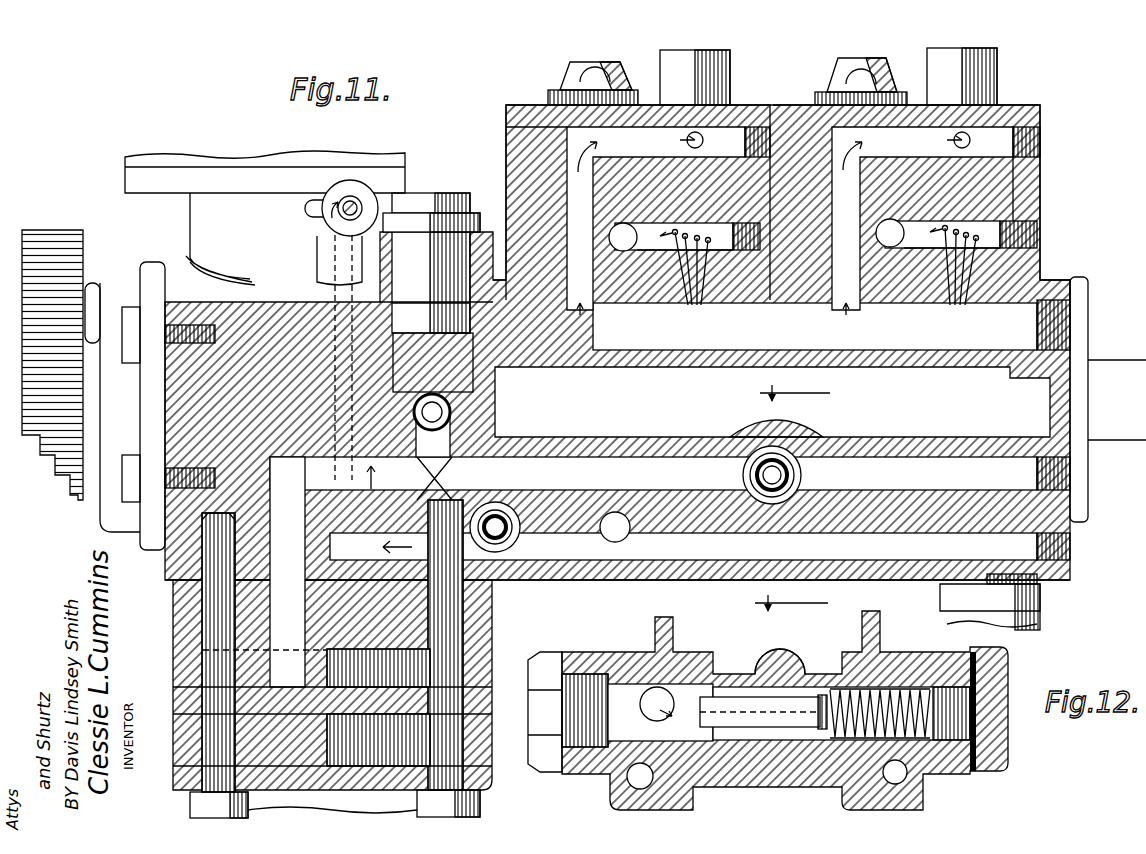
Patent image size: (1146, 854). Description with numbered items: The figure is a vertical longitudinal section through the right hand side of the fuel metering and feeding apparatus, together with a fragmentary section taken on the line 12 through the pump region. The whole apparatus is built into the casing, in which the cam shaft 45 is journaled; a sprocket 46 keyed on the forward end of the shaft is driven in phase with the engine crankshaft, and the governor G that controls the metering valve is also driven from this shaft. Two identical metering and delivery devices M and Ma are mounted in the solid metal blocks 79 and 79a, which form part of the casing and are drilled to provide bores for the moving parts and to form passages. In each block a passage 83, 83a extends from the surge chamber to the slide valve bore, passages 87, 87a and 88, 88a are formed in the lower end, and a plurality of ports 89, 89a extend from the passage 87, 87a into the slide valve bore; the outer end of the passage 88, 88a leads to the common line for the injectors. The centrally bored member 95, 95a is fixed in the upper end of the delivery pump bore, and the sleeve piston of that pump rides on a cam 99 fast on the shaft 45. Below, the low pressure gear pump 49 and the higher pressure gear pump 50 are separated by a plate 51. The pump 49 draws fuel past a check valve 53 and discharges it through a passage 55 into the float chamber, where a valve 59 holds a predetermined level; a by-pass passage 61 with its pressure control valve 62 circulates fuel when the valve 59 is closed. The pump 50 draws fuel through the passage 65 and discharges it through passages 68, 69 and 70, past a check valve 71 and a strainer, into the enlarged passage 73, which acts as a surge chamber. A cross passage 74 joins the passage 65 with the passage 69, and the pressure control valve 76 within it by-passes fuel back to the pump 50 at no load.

In FIG. 11, the governor G is at (125, 160).
In FIG. 11, the sprocket 46 is at (80, 215).
In FIG. 11, the metering and delivery device M is at (517, 102).
In FIG. 11, the second metering and delivery device Ma is at (790, 102).
In FIG. 11, the member 95 is at (608, 78).
In FIG. 11, the member of second device 95a is at (878, 70).
In FIG. 11, the solid metal block 79 is at (520, 141).
In FIG. 11, the second solid metal block 79a is at (1020, 183).
In FIG. 11, the passage 83 is at (578, 186).
In FIG. 11, the passage of second device 83a is at (852, 195).
In FIG. 11, the passage 88 is at (618, 239).
In FIG. 11, the passage of second device 88a is at (882, 230).
In FIG. 11, the passage 87 is at (656, 250).
In FIG. 11, the passage of second device 87a is at (915, 250).
In FIG. 11, the ports 89 is at (685, 284).
In FIG. 11, the ports of second device 89a is at (954, 280).
In FIG. 11, the cam 99 is at (1115, 255).
In FIG. 11, the enlarged passage 73 is at (722, 335).
In FIG. 11, the cross passage 74 is at (888, 428).
In FIG. 12, the cross passage 74 is at (725, 690).
In FIG. 11, the section line 12- 12 is at (795, 500).
In FIG. 11, the pressure control valve 76 is at (802, 477).
In FIG. 12, the pressure control valve 76 is at (826, 750).
In FIG. 11, the check valve 71 is at (452, 410).
In FIG. 11, the passage 70 is at (472, 430).
In FIG. 11, the passage 69 is at (380, 477).
In FIG. 12, the passage 69 is at (650, 694).
In FIG. 11, the pressure control valve 62 is at (496, 515).
In FIG. 11, the by-pass passage 61 is at (500, 548).
In FIG. 11, the passage 55 is at (625, 540).
In FIG. 12, the passage 55 is at (636, 782).
In FIG. 11, the passage 68 is at (200, 566).
In FIG. 11, the low pressure gear pump 49 is at (203, 650).
In FIG. 11, the plate 51 is at (180, 703).
In FIG. 11, the higher pressure gear pump 50 is at (196, 772).
In FIG. 11, the check valve 53 is at (1038, 622).
In FIG. 12, the cam shaft 45 is at (802, 637).
In FIG. 12, the passage 65 is at (878, 705).
In FIG. 12, the valve 59 is at (905, 776).